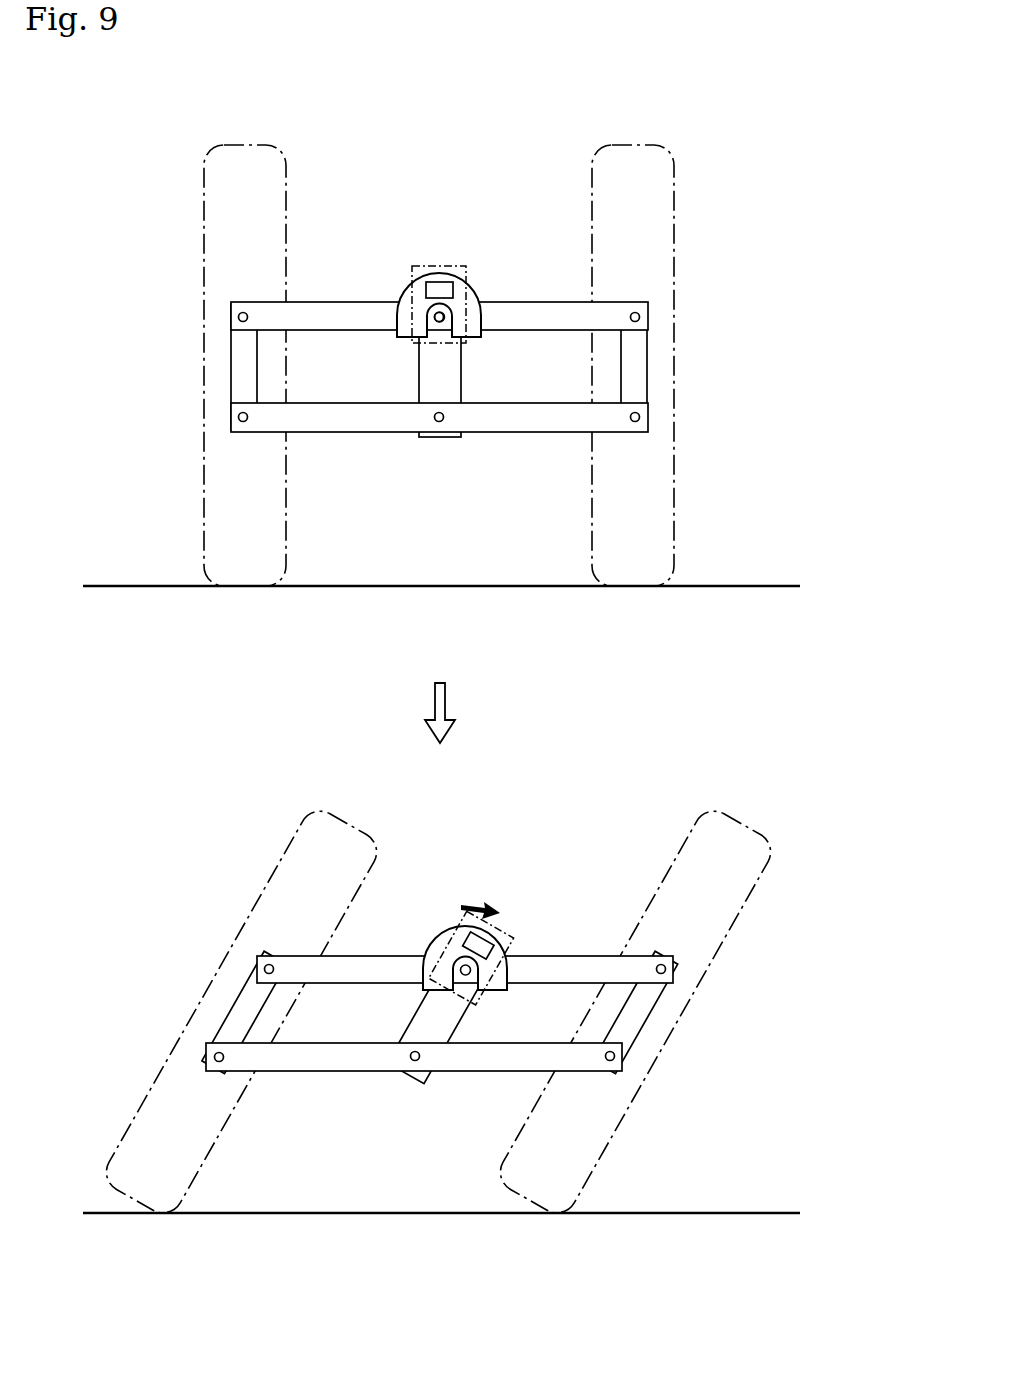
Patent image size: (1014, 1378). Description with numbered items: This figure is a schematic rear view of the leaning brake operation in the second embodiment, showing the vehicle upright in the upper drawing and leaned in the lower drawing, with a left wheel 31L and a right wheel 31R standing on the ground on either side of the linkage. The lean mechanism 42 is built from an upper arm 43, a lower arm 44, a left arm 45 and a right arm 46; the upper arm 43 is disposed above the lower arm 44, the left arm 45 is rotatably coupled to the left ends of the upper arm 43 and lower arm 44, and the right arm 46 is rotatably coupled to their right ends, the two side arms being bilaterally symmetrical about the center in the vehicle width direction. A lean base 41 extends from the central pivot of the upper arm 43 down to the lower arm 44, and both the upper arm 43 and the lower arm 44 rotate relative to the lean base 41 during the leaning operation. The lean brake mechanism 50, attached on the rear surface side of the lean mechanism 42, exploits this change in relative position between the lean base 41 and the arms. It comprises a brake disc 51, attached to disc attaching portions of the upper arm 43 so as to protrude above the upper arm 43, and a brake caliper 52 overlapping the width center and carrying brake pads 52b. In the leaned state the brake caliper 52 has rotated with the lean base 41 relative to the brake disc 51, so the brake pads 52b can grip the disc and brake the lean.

The left wheel 31L is at (204, 202).
The right wheel 31R is at (674, 202).
The lean base 41 is at (405, 393).
The lean mechanism 42 is at (433, 638).
The upper arm 43 is at (512, 312).
The lower arm 44 is at (512, 432).
The left arm 45 is at (245, 365).
The right arm 46 is at (630, 370).
The lean brake mechanism 50 is at (447, 541).
The brake disc 51 is at (400, 318).
The brake caliper 52 is at (462, 268).
The brake pads 52b is at (437, 282).